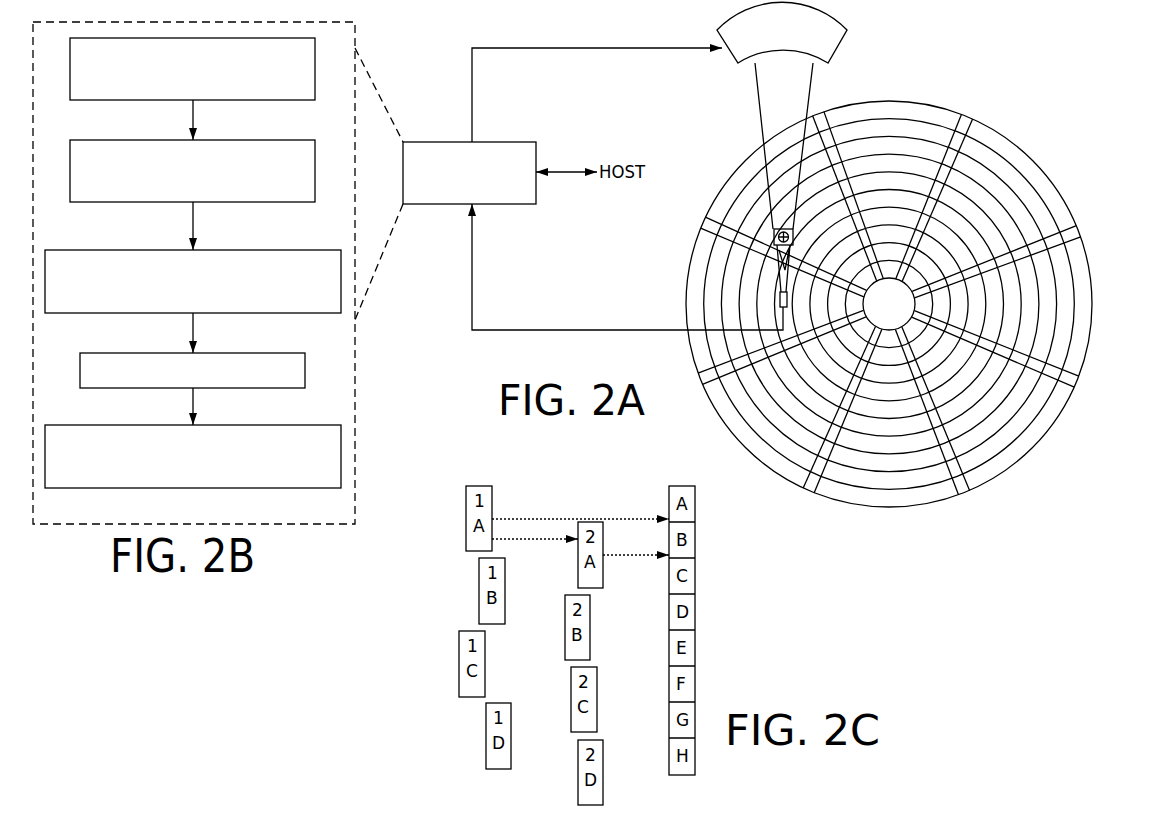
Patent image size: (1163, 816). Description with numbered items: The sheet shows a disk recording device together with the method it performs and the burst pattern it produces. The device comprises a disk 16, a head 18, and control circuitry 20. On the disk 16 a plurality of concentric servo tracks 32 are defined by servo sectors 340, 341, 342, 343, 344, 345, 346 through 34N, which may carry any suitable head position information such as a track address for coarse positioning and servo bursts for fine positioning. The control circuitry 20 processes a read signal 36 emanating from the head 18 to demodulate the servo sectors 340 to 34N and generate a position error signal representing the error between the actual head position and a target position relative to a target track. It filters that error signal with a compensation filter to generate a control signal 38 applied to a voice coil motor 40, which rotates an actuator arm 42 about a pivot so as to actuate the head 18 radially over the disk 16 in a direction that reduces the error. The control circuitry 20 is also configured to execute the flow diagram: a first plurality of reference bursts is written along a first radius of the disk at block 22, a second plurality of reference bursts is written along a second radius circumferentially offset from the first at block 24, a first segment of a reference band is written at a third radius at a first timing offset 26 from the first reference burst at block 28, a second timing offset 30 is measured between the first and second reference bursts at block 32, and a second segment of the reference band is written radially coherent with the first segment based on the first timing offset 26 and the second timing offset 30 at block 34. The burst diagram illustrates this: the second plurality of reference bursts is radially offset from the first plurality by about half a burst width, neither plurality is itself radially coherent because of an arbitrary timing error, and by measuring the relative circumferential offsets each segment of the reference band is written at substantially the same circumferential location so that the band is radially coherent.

In FIG. 2A, the disk 16 is at (1027, 147).
In FIG. 2A, the head 18 is at (776, 298).
In FIG. 2A, the control circuitry 20 is at (500, 142).
In FIG. 2B, the block 22 is at (275, 100).
In FIG. 2B, the block 24 is at (283, 202).
In FIG. 2C, the first timing offset 26 is at (534, 516).
In FIG. 2B, the block 28 is at (300, 313).
In FIG. 2C, the second timing offset 30 is at (533, 545).
In FIG. 2B, the block / concentric servo tracks 32 is at (285, 388).
In FIG. 2A, the block / concentric servo tracks 32 is at (887, 128).
In FIG. 2B, the block 34 is at (300, 488).
In FIG. 2A, the servo sector 340 is at (966, 122).
In FIG. 2A, the servo sector 341 is at (1068, 232).
In FIG. 2A, the servo sector 342 is at (1070, 382).
In FIG. 2A, the servo sector 343 is at (962, 488).
In FIG. 2A, the servo sector 344 is at (807, 488).
In FIG. 2A, the servo sector 345 is at (702, 380).
In FIG. 2A, the servo sector 346 is at (710, 222).
In FIG. 2A, the servo sector 34N is at (816, 118).
In FIG. 2A, the read signal 36 is at (580, 328).
In FIG. 2A, the control signal 38 is at (472, 84).
In FIG. 2A, the voice coil motor 40 is at (733, 60).
In FIG. 2A, the actuator arm 42 is at (768, 128).